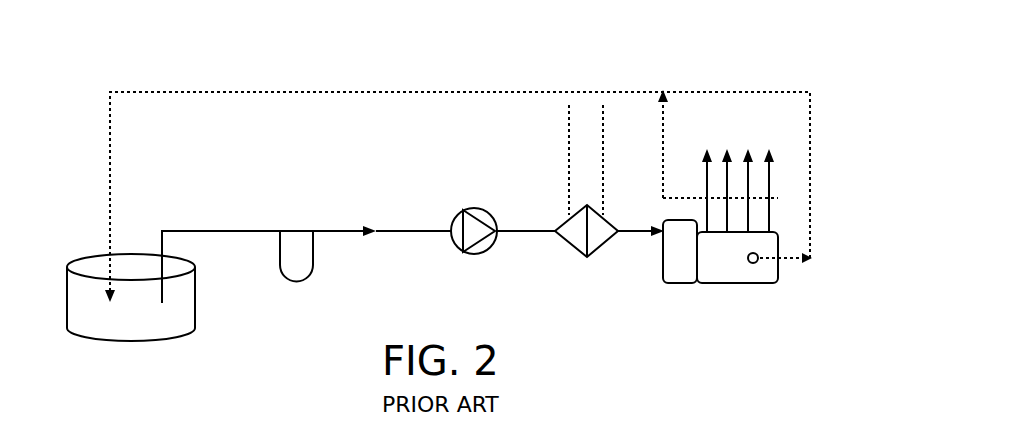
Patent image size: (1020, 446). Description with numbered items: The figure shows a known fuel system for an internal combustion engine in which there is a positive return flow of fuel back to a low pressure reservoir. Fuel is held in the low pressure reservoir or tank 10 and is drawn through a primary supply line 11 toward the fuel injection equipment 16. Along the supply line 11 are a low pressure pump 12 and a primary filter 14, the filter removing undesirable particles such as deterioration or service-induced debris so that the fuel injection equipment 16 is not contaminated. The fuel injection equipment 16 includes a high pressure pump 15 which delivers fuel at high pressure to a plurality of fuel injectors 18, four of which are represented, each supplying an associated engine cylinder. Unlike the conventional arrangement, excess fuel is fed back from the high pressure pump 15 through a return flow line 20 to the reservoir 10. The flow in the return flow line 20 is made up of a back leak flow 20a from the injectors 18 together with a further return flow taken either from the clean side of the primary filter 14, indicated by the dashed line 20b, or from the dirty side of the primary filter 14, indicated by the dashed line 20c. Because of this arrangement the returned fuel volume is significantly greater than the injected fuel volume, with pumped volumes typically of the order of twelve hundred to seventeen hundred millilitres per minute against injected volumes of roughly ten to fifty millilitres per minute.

The low pressure reservoir or tank 10 is at (187, 303).
The primary supply line 11 is at (395, 233).
The low pressure pump 12 is at (485, 253).
The primary filter 14 is at (597, 250).
The high pressure pump 15 is at (733, 275).
The fuel injection equipment 16 is at (786, 226).
The fuel injectors 18 is at (769, 175).
The return flow line 20 is at (441, 90).
The back leak flow 20a is at (665, 120).
The return flow from clean side of primary filter 20b is at (603, 138).
The return flow from dirty side of primary filter 20c is at (563, 192).